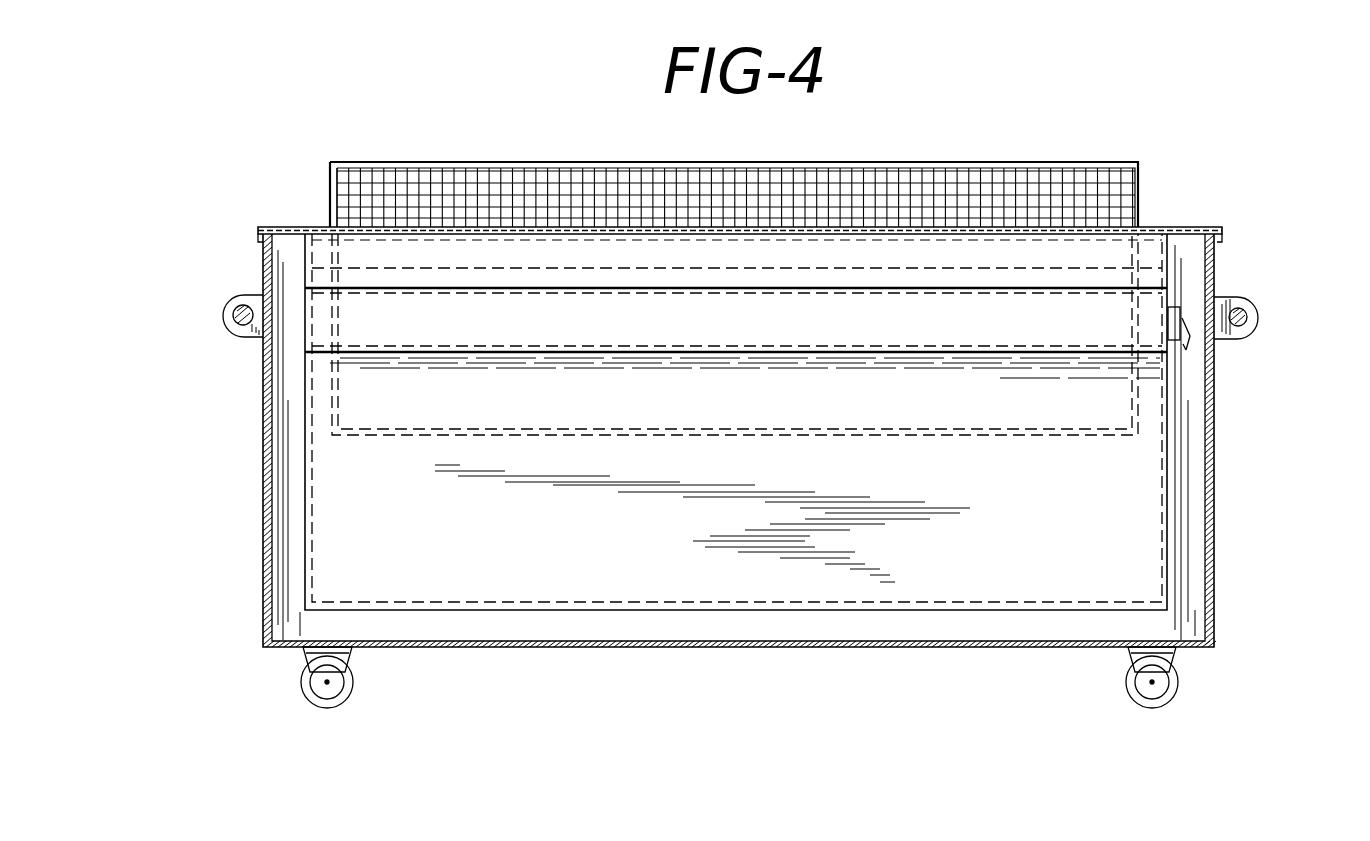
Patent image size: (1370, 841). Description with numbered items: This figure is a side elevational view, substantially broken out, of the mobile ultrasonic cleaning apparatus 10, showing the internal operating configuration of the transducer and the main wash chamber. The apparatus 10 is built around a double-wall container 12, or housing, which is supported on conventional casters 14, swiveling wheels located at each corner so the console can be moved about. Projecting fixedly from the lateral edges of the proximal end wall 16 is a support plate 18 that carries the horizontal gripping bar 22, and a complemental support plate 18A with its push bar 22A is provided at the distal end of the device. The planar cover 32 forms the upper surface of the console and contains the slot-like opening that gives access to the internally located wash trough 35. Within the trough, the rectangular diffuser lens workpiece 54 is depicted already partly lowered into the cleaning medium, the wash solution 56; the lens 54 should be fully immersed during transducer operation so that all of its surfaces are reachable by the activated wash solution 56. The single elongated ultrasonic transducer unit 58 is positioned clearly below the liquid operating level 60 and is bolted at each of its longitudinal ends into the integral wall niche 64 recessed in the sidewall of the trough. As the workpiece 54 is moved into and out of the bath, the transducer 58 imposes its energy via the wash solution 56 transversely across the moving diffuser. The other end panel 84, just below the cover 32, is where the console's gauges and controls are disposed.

The mobile ultrasonic cleaning apparatus 10 is at (1022, 138).
The double-wall container 12 is at (264, 565).
The casters 14 is at (310, 690).
The proximal end wall 16 is at (265, 466).
The support plate 18 is at (238, 295).
The support plate 18A is at (1252, 297).
The gripping bar 22 is at (240, 325).
The push bar 22A is at (1258, 316).
The planar cover 32 is at (1172, 228).
The wash trough 35 is at (1095, 513).
The diffuser lens workpiece 54 is at (498, 161).
The wash solution 56 is at (443, 277).
The ultrasonic transducer unit 58 is at (830, 293).
The liquid operating level 60 is at (374, 267).
The integral wall niche 64 is at (350, 355).
The end panel 84 is at (1213, 392).